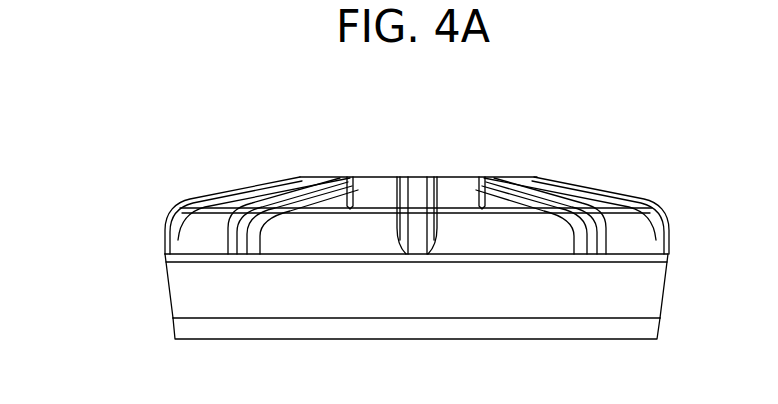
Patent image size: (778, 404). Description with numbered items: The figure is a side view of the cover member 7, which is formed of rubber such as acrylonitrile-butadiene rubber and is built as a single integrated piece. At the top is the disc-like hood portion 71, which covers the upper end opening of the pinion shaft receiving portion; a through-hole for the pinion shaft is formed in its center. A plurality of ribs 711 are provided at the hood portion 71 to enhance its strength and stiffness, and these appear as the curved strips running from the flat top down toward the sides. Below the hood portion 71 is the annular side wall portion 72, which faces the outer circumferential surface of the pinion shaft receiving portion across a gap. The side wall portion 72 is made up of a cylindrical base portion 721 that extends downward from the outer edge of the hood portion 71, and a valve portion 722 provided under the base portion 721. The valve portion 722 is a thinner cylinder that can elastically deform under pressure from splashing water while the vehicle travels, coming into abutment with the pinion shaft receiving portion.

The cover member 7 is at (198, 171).
The hood portion 71 is at (448, 215).
The ribs 711 is at (584, 190).
The side wall portion 72 is at (81, 283).
The base portion 721 is at (193, 295).
The valve portion 722 is at (193, 328).